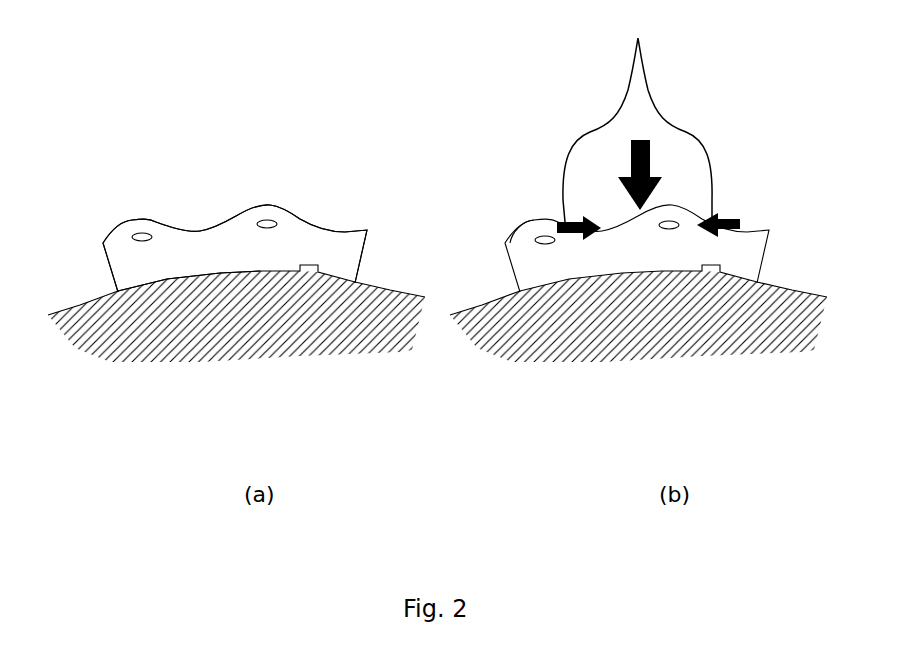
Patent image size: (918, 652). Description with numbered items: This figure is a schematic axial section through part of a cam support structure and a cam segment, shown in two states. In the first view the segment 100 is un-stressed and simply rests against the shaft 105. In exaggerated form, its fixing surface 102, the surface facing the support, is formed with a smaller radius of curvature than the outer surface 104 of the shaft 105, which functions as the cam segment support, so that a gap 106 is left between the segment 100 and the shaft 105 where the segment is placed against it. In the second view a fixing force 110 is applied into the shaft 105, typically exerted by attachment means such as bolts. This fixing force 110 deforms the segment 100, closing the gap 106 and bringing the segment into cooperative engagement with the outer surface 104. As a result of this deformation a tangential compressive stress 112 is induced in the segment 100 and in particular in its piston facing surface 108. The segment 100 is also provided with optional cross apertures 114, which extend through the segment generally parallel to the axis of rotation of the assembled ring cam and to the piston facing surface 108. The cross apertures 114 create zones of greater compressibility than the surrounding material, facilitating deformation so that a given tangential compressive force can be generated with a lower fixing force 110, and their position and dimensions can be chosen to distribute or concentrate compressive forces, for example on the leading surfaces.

The segment 100 is at (298, 222).
The fixing surface 102 is at (260, 270).
The outer surface 104 is at (387, 287).
The shaft 105 is at (112, 312).
The gap 106 is at (210, 231).
The piston facing surface 108 is at (237, 272).
The fixing force 110 is at (648, 176).
The tangential compressive stress 112 is at (637, 117).
The cross apertures 114 is at (143, 238).